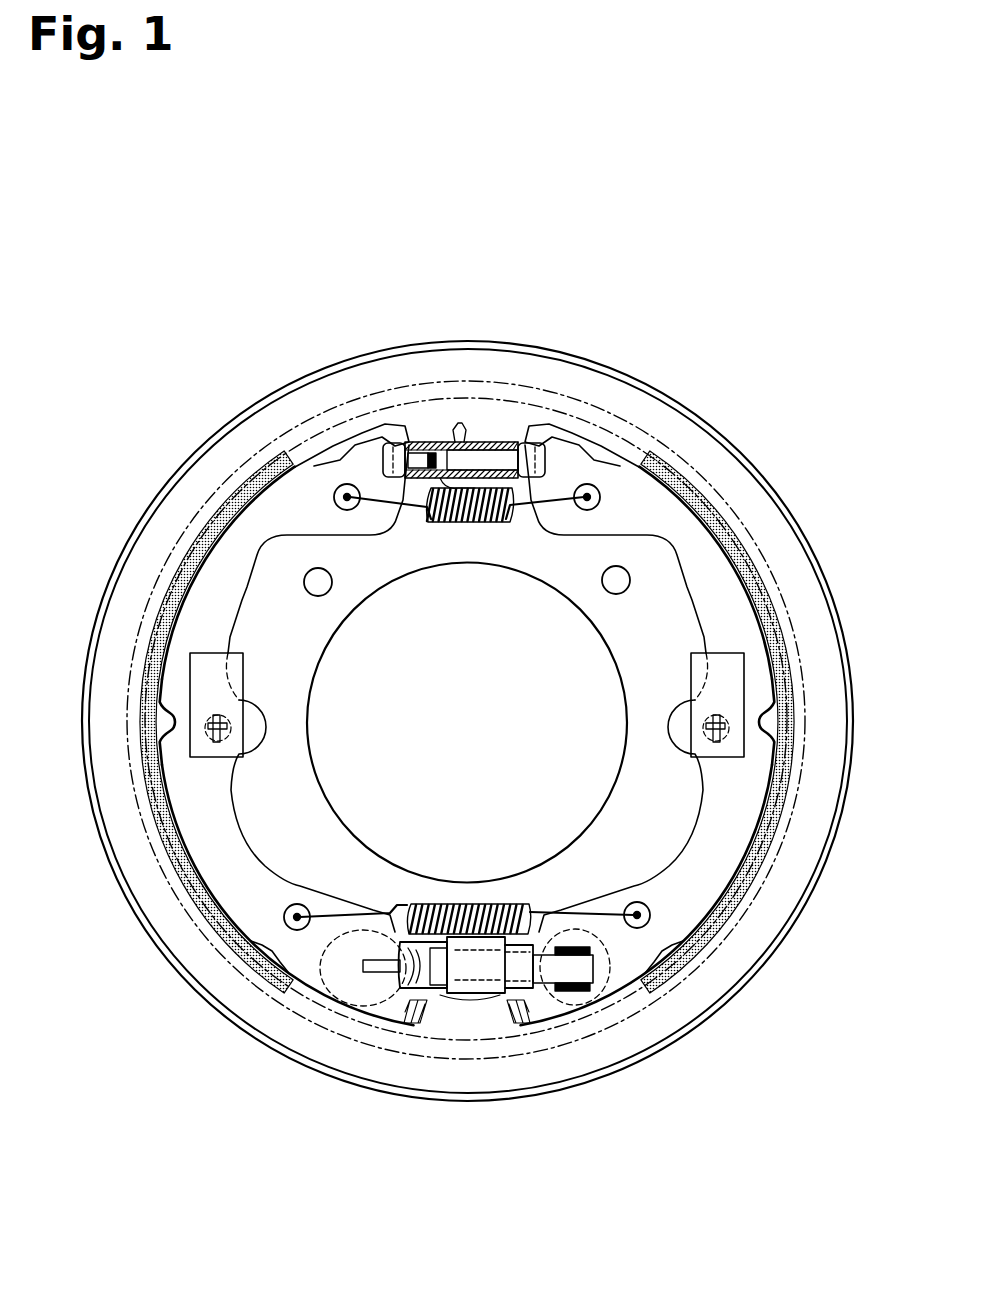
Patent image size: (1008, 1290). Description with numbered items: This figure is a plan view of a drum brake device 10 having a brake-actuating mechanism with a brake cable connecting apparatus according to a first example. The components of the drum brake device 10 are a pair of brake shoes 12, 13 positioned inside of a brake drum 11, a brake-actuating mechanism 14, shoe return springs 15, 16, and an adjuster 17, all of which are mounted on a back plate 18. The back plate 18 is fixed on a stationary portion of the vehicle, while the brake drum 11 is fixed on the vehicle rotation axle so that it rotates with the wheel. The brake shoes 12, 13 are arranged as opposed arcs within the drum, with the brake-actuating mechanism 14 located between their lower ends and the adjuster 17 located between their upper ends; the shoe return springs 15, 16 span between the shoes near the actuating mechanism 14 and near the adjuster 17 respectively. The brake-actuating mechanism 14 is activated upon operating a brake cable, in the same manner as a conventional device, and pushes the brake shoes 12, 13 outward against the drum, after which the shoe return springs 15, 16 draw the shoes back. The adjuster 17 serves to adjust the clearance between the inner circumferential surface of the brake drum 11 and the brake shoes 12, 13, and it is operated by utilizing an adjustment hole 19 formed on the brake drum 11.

The drum brake device 10 is at (720, 316).
The brake drum 11 is at (673, 458).
The brake shoe 12 is at (720, 593).
The brake shoe 13 is at (206, 592).
The brake-actuating mechanism 14 is at (472, 997).
The shoe return spring 15 is at (383, 931).
The shoe return spring 16 is at (550, 450).
The adjuster 17 is at (494, 440).
The back plate 18 is at (826, 878).
The adjustment hole 19 is at (305, 470).